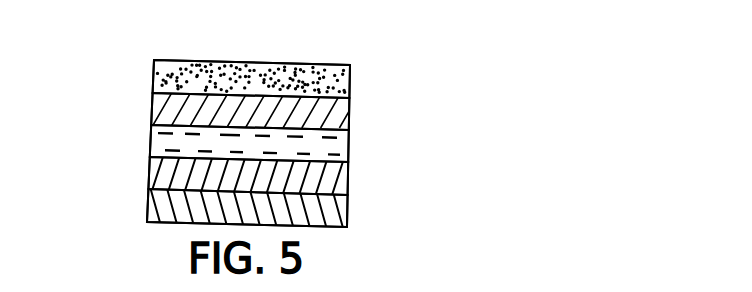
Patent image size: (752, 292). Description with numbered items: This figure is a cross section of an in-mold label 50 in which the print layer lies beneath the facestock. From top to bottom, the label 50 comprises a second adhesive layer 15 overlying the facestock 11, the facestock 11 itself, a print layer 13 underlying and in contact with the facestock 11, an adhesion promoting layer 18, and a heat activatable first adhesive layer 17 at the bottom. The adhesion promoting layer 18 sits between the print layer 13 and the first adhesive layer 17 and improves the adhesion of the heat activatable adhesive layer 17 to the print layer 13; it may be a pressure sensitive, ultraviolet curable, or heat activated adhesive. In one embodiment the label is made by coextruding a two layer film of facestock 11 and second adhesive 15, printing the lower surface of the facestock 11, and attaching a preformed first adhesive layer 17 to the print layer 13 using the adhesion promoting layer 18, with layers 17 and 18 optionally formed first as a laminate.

The label 50 is at (116, 48).
The second adhesive layer 15 is at (352, 82).
The facestock 11 is at (352, 117).
The print layer 13 is at (352, 148).
The adhesion promoting layer 18 is at (352, 178).
The heat activatable first adhesive layer 17 is at (348, 212).